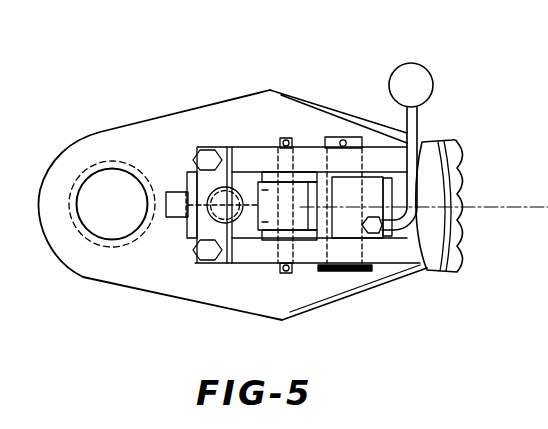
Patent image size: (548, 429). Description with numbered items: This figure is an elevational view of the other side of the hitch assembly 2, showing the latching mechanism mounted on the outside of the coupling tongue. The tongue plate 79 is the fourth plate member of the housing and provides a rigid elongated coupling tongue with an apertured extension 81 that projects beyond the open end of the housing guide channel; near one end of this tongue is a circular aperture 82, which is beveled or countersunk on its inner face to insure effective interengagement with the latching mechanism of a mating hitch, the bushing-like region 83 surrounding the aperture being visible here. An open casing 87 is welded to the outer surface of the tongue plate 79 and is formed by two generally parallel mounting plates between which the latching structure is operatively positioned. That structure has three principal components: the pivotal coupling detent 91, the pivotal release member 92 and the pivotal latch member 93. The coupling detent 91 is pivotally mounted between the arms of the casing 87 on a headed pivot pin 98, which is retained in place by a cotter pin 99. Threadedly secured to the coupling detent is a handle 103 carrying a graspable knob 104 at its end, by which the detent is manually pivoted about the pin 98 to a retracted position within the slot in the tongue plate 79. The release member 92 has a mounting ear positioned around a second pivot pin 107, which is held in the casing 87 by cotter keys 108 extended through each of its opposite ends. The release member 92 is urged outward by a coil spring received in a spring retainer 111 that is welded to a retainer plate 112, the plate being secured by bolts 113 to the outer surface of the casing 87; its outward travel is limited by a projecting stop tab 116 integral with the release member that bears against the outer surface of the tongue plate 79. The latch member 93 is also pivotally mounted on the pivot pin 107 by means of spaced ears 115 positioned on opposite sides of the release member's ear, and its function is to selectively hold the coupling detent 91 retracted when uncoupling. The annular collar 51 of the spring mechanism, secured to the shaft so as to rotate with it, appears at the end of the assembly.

The tool assembly 2 is at (389, 298).
The annular collar 51 is at (439, 267).
The tongue plate 79 is at (343, 140).
The apertured extension 81 is at (139, 128).
The circular aperture 82 is at (110, 180).
The bushing 83 is at (78, 180).
The open casing 87 is at (281, 96).
The coupling detent 91 is at (424, 207).
The release member 92 is at (252, 215).
The latch member 93 is at (310, 226).
The headed pivot pin 98 is at (363, 146).
The cotter pin 99 is at (361, 137).
The handle 103 is at (418, 121).
The knob 104 is at (421, 77).
The second pivot pin 107 is at (293, 139).
The cotter keys 108 is at (295, 139).
The spring retainer 111 is at (238, 191).
The retainer plate 112 is at (224, 150).
The bolts 113 is at (205, 259).
The spaced ears 115 is at (296, 180).
The stop tab 116 is at (172, 192).